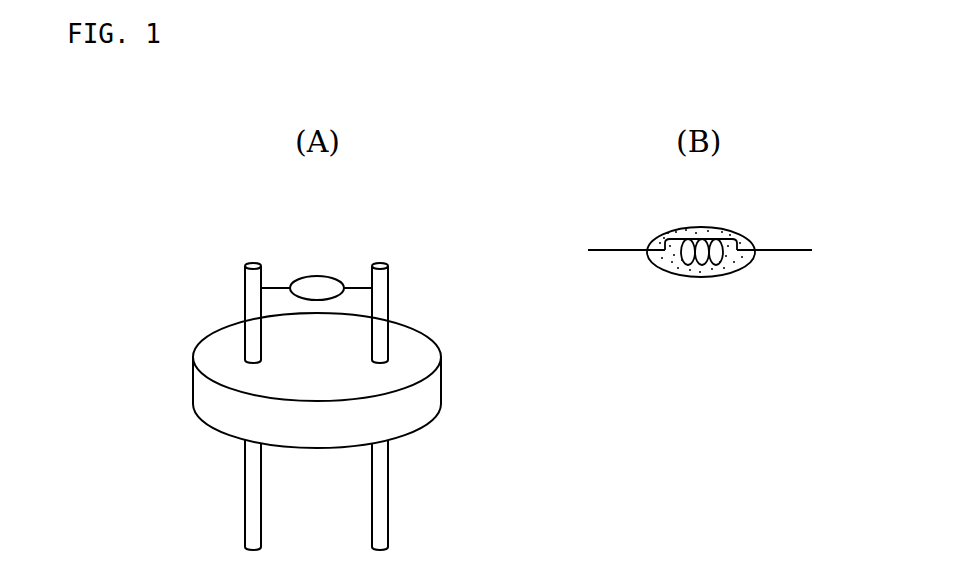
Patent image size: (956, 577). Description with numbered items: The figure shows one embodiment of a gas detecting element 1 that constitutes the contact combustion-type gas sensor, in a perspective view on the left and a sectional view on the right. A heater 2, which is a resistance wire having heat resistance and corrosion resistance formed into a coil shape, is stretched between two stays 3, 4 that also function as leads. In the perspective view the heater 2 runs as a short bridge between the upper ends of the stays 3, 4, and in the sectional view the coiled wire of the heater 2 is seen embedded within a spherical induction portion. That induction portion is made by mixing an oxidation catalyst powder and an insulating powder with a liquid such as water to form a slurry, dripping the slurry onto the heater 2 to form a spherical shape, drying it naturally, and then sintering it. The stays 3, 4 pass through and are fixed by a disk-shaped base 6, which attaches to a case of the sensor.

The gas detecting element 1 is at (295, 368).
The heater 2 is at (709, 236).
The stay 3 is at (250, 496).
The stay 4 is at (380, 496).
The base 6 is at (200, 388).